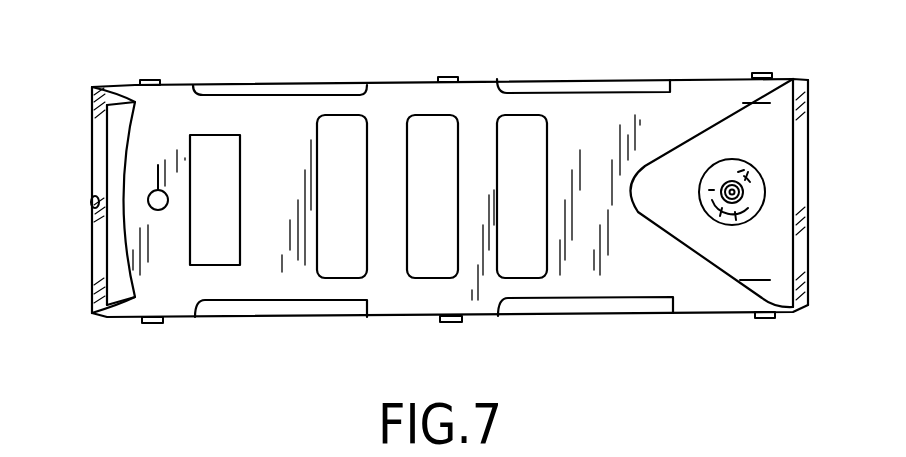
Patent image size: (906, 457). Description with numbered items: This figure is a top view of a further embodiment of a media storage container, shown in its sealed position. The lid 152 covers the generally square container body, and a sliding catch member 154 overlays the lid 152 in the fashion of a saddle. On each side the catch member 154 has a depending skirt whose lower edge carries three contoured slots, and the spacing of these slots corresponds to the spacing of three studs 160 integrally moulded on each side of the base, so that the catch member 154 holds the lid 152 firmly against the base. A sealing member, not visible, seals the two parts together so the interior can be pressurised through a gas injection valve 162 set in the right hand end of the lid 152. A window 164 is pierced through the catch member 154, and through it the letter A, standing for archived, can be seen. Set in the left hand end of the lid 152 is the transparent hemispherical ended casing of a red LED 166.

The lid 152 is at (117, 256).
The sliding catch member 154 is at (377, 84).
The studs 160 is at (152, 80).
The gas injection valve 162 is at (736, 190).
The window 164 is at (158, 210).
The red LED 166 is at (92, 198).